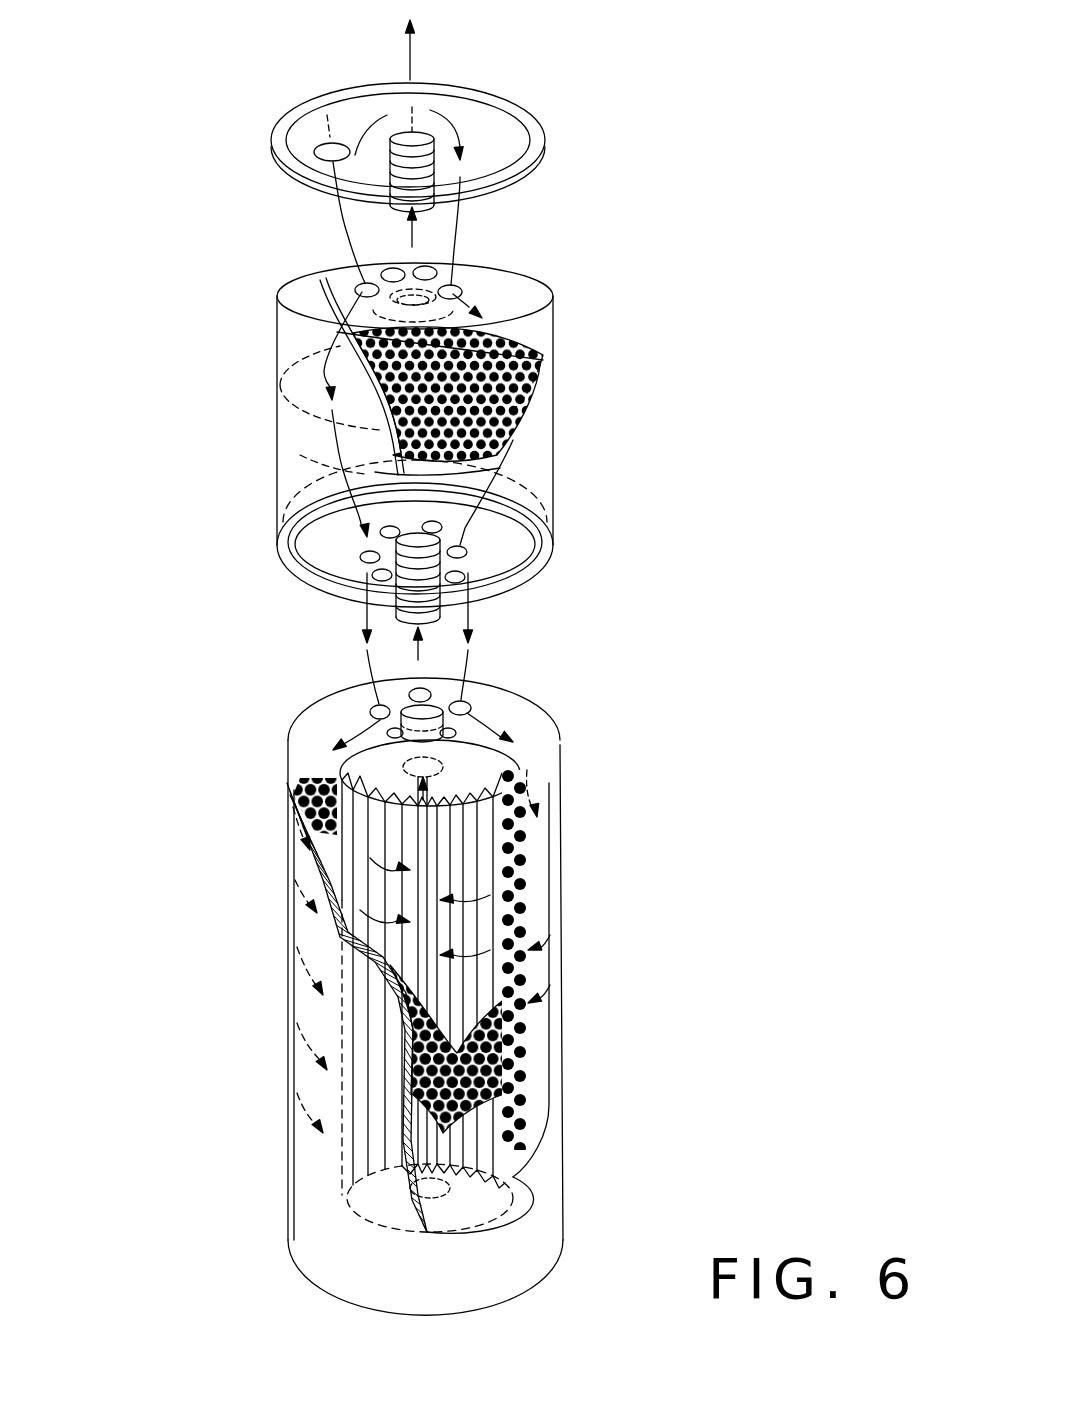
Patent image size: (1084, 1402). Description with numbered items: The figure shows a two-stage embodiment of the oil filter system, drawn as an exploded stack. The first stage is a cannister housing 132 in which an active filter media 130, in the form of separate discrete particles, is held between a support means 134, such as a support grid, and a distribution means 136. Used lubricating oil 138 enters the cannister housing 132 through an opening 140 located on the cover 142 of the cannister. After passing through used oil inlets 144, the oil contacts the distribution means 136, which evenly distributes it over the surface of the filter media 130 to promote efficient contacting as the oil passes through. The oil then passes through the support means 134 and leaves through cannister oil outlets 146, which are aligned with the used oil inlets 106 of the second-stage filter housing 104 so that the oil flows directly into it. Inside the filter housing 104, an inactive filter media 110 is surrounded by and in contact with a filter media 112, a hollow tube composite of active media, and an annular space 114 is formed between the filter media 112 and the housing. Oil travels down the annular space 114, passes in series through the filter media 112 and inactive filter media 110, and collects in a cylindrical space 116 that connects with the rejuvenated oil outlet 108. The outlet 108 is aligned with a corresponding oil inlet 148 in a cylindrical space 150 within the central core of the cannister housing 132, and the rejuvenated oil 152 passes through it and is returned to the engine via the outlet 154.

The filter housing 104 is at (556, 735).
The used oil inlets 106 is at (372, 712).
The rejuvenated oil outlet 108 is at (413, 693).
The inactive filter media 110 is at (470, 1148).
The filter media 112 is at (510, 1070).
The annular space 114 is at (533, 913).
The cylindrical space 116 is at (347, 760).
The active filter media 130 is at (487, 427).
The cannister housing 132 is at (513, 290).
The support means 134 is at (518, 473).
The distribution means 136 is at (528, 352).
The used lubricating oil 138 is at (323, 90).
The opening 140 is at (330, 160).
The cover 142 is at (547, 141).
The used oil inlets 144 is at (367, 283).
The cannister oil outlets 146 is at (368, 560).
The oil inlet 148 is at (440, 613).
The cylindrical space 150 is at (400, 298).
The rejuvenated oil 152 is at (417, 38).
The outlet 154 is at (420, 134).